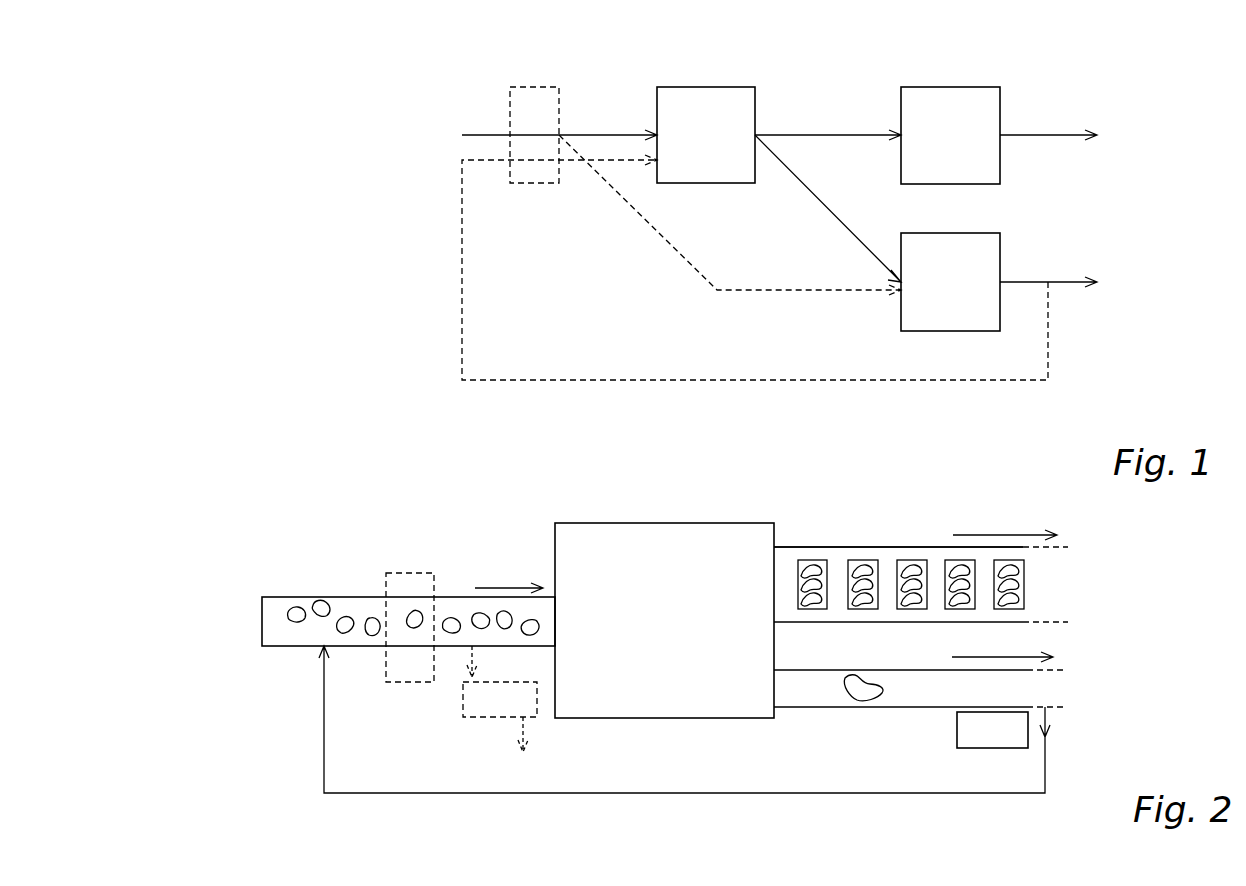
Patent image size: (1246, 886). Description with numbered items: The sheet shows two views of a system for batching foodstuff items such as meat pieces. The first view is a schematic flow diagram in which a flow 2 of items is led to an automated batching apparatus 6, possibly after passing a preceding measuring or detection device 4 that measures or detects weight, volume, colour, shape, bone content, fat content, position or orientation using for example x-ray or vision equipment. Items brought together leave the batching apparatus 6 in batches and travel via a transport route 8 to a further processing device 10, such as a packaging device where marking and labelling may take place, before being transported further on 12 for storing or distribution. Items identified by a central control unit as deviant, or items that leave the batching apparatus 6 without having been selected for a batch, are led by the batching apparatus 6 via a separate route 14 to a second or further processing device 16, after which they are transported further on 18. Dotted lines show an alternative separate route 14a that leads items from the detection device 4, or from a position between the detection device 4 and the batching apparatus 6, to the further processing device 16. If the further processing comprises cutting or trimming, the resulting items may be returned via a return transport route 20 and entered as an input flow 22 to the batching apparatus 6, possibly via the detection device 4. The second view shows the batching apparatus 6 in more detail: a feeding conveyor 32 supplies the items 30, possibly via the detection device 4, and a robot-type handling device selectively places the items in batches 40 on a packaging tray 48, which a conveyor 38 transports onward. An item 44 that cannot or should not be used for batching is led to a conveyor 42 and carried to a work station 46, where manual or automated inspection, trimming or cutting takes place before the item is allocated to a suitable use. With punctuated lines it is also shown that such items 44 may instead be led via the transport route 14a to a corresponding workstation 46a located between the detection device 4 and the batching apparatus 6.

In FIG. 1, the flow of items 2 is at (482, 135).
In FIG. 2, the flow of items 2 is at (374, 580).
In FIG. 1, the measuring or detection device 4 is at (537, 87).
In FIG. 2, the measuring or detection device 4 is at (435, 573).
In FIG. 1, the batching apparatus 6 is at (700, 87).
In FIG. 2, the batching apparatus 6 is at (712, 523).
In FIG. 1, the transport route 8 is at (818, 135).
In FIG. 2, the transport route 8 is at (926, 533).
In FIG. 1, the further processing device 10 is at (960, 87).
In FIG. 1, the onward transport 12 is at (1040, 135).
In FIG. 1, the separate route 14 is at (830, 213).
In FIG. 1, the separate route 14a is at (683, 258).
In FIG. 2, the separate route 14a is at (465, 660).
In FIG. 1, the second or further processing device 16 is at (1003, 248).
In FIG. 1, the onward transport 18 is at (1068, 282).
In FIG. 1, the return transport route 20 is at (1048, 340).
In FIG. 2, the return transport route 20 is at (1047, 757).
In FIG. 1, the input flow 22 is at (575, 160).
In FIG. 2, the items 30 is at (303, 600).
In FIG. 2, the feeding conveyor 32 is at (337, 597).
In FIG. 2, the conveyor 38 is at (858, 547).
In FIG. 2, the batches 40 is at (829, 546).
In FIG. 2, the conveyor 42 is at (900, 707).
In FIG. 2, the item 44 is at (846, 699).
In FIG. 2, the work station 46 is at (985, 748).
In FIG. 2, the workstation 46a is at (478, 717).
In FIG. 2, the packaging tray 48 is at (795, 565).